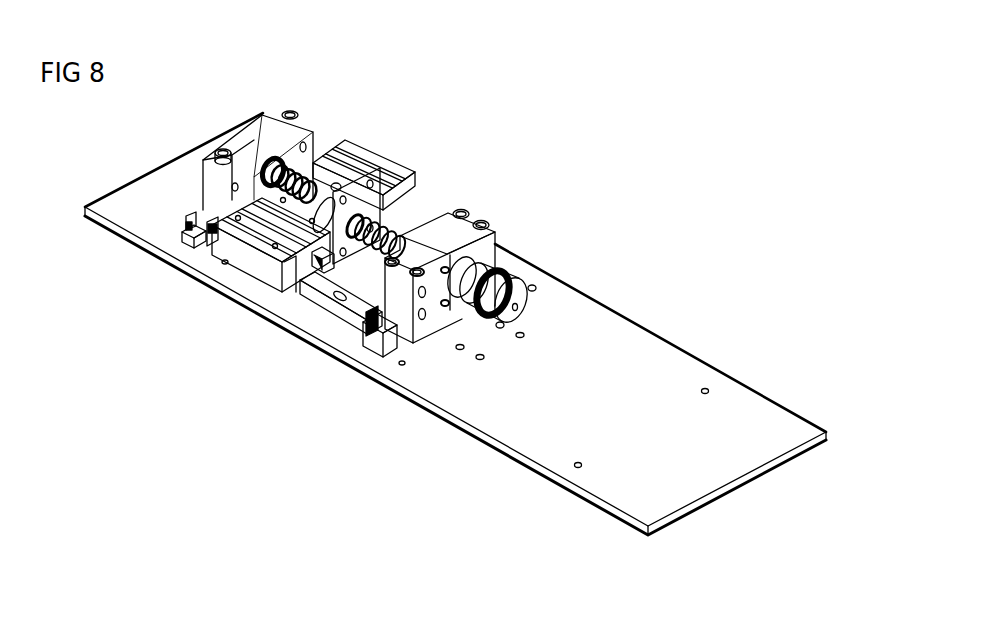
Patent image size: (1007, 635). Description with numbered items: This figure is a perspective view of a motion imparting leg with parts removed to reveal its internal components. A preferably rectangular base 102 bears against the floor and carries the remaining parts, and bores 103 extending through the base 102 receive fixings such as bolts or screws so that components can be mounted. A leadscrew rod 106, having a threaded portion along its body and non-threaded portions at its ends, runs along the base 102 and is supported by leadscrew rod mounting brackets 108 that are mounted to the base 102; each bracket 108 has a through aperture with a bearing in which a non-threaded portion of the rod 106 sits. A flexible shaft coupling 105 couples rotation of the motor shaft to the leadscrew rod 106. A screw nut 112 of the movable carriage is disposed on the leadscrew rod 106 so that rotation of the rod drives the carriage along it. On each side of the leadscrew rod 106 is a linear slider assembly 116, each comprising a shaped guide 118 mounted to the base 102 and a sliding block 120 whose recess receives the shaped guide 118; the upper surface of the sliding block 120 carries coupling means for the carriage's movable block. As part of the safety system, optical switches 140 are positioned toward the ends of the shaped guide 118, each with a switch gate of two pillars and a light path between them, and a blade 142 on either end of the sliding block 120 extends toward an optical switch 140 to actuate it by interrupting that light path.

The base 102 is at (695, 470).
The bores 103 is at (706, 390).
The flexible shaft coupling 105 is at (522, 290).
The leadscrew rod 106 is at (397, 238).
The leadscrew rod mounting brackets 108 is at (207, 177).
The screw nut 112 is at (326, 183).
The linear slider assemblies 116 is at (258, 281).
The shaped guide 118 is at (340, 298).
The sliding block 120 is at (353, 140).
The optical switches 140 is at (380, 340).
The blade 142 is at (237, 152).